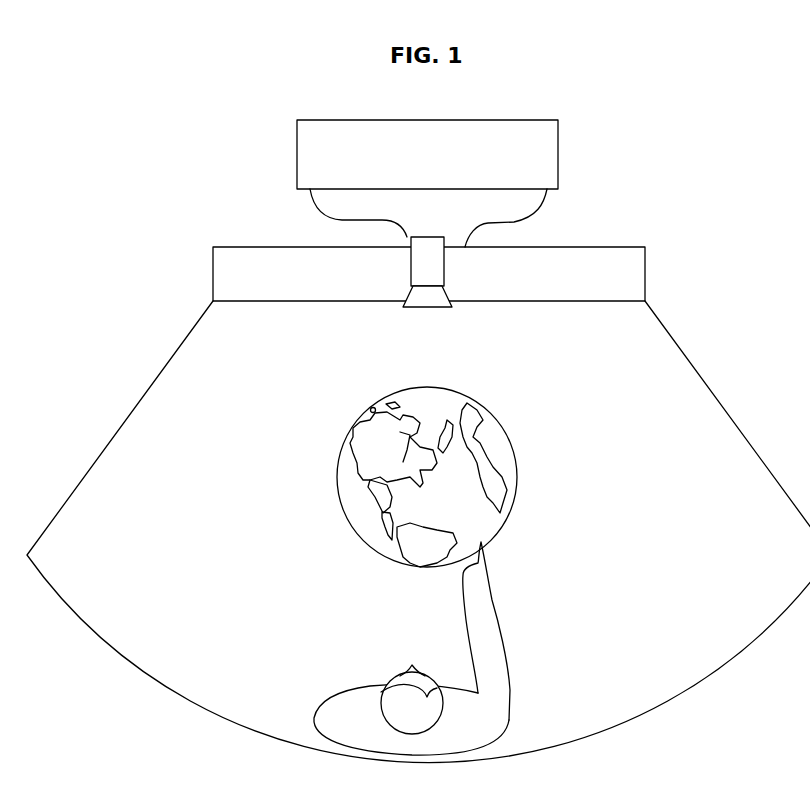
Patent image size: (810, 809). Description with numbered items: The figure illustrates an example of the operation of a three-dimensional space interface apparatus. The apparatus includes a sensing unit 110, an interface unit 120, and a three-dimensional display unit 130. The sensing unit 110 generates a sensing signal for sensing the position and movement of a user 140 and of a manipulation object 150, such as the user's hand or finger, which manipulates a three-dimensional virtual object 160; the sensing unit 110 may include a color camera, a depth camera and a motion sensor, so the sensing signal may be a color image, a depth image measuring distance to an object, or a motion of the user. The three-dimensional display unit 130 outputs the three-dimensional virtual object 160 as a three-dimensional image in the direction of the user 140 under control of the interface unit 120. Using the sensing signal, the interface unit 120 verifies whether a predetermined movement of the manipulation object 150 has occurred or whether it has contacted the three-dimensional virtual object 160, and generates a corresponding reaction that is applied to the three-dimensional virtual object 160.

The sensing unit 110 is at (413, 308).
The interface unit 120 is at (558, 152).
The 3D display unit 130 is at (645, 272).
The user 140 is at (330, 695).
The manipulation object 150 is at (490, 563).
The 3D virtual object 160 is at (505, 423).